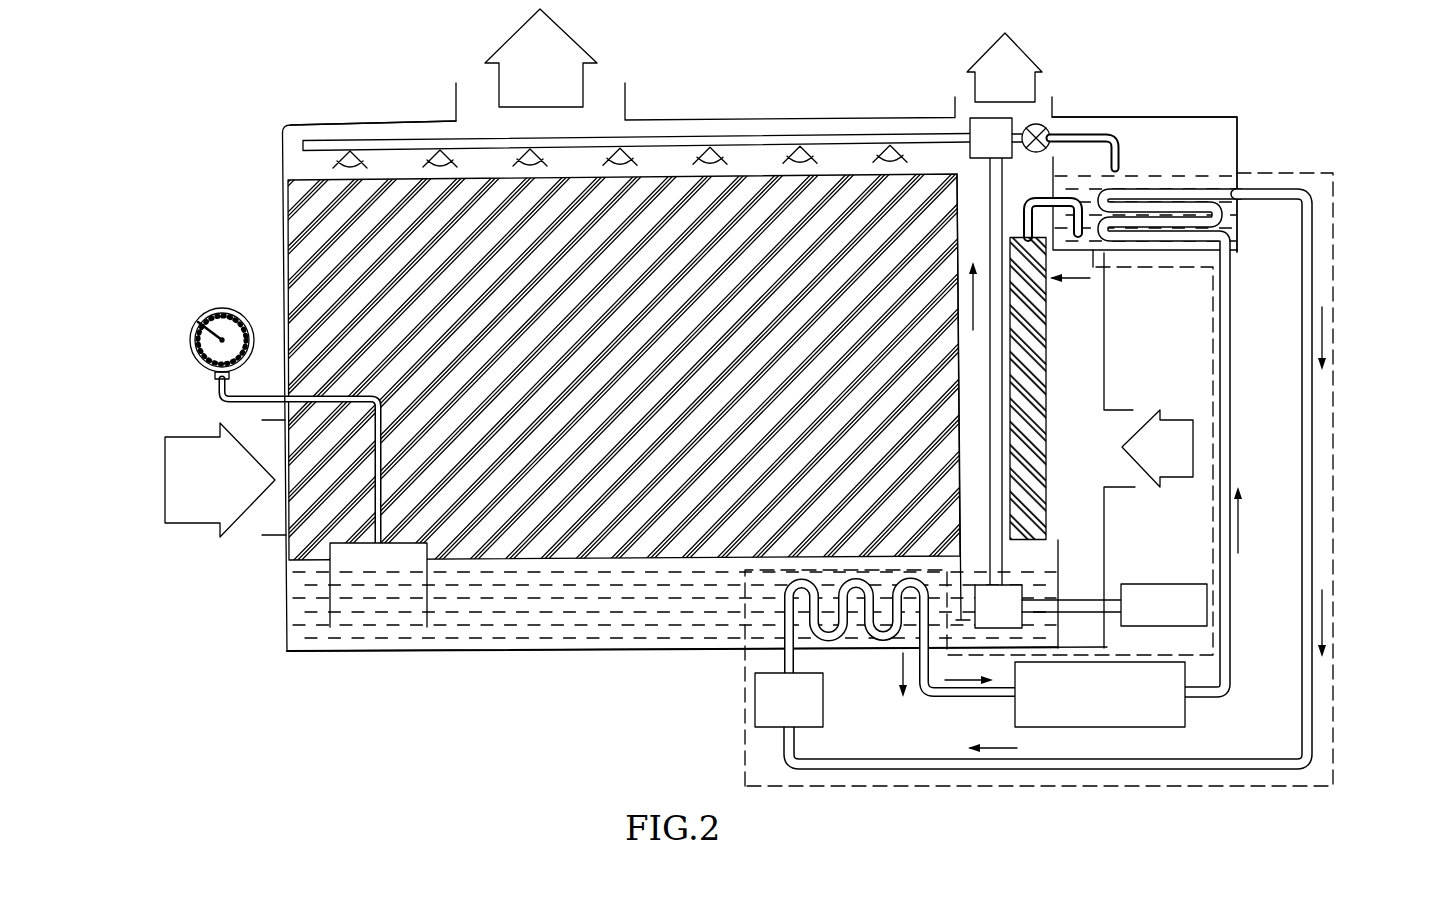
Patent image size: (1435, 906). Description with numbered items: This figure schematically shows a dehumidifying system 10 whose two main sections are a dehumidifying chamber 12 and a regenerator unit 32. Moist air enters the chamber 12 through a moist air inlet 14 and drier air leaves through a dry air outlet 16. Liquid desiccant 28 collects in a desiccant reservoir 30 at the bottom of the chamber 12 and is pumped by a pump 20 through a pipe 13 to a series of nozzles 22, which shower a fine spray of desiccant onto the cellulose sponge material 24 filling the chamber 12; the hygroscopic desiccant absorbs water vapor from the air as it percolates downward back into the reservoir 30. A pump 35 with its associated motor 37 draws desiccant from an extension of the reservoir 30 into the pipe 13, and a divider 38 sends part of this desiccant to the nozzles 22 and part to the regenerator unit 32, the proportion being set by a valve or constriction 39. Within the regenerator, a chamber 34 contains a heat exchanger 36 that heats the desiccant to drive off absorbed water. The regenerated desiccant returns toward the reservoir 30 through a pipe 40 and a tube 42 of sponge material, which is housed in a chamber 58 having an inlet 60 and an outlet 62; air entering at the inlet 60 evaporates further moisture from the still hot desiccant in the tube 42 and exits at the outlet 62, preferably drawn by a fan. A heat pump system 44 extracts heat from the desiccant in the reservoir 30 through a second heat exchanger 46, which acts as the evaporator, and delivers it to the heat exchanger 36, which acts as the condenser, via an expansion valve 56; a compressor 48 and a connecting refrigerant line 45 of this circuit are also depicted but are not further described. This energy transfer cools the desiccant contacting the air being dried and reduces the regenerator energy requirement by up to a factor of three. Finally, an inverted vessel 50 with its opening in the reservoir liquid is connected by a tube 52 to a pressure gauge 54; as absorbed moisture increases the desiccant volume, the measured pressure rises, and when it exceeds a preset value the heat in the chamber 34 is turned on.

The dehumidifying system 10 is at (300, 80).
The dehumidifying chamber 12 is at (284, 204).
The pipe 13 is at (987, 467).
The moist air inlet 14 is at (277, 537).
The dry air outlet 16 is at (628, 100).
The pump 20 is at (1000, 612).
The nozzles 22 is at (905, 147).
The cellulose sponge material 24 is at (636, 379).
The desiccant 28 is at (650, 618).
The desiccant reservoir 30 is at (447, 652).
The regenerator unit 32 is at (1213, 87).
The chamber 34 is at (1243, 128).
The pump 35 is at (1023, 560).
The heat exchanger 36 is at (1190, 193).
The motor 37 is at (1157, 583).
The divider 38 is at (972, 117).
The valve or constriction 39 is at (1037, 123).
The pipe 40 is at (1035, 198).
The tube of sponge material 42 is at (1035, 382).
The heat pump system 44 is at (1362, 305).
The refrigerant line 45 is at (1333, 210).
The second heat exchanger 46 is at (837, 633).
The compressor 48 is at (1192, 715).
The inverted vessel 50 is at (323, 568).
The tube 52 is at (383, 473).
The pressure gauge 54 is at (215, 312).
The expansion valve 56 is at (745, 700).
The chamber 58 is at (1110, 340).
The inlet 60 is at (1122, 407).
The outlet 62 is at (1057, 103).